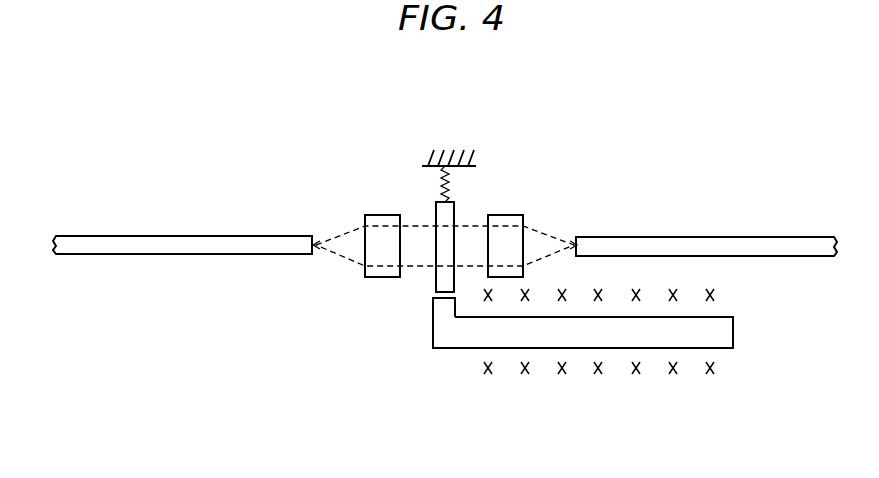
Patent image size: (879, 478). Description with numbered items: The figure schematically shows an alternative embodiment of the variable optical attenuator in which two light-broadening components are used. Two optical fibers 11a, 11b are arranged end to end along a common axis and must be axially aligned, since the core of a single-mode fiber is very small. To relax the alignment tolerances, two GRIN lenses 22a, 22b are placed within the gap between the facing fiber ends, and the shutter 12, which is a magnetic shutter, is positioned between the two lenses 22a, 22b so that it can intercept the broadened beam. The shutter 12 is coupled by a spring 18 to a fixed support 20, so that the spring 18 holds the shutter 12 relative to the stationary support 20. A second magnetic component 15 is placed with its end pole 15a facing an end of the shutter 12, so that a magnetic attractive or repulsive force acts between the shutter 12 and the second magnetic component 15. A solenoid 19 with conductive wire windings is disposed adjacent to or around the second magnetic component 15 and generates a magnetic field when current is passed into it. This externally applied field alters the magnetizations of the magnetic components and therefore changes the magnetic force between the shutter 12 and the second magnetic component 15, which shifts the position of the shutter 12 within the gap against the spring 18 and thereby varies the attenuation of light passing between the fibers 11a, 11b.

The optical fiber 11a is at (715, 237).
The optical fiber 11b is at (155, 236).
The GRIN lens 22a is at (383, 215).
The GRIN lens 22b is at (512, 215).
The shutter 12 is at (436, 283).
The spring 18 is at (448, 185).
The fixed support 20 is at (463, 164).
The second magnetic component 15 is at (612, 348).
The end pole 15a is at (440, 297).
The solenoid 19 is at (561, 379).